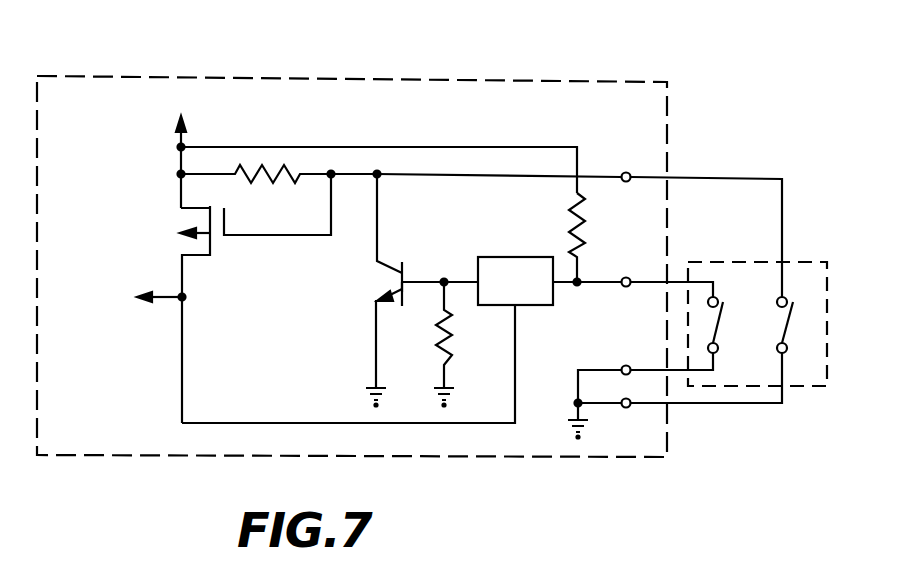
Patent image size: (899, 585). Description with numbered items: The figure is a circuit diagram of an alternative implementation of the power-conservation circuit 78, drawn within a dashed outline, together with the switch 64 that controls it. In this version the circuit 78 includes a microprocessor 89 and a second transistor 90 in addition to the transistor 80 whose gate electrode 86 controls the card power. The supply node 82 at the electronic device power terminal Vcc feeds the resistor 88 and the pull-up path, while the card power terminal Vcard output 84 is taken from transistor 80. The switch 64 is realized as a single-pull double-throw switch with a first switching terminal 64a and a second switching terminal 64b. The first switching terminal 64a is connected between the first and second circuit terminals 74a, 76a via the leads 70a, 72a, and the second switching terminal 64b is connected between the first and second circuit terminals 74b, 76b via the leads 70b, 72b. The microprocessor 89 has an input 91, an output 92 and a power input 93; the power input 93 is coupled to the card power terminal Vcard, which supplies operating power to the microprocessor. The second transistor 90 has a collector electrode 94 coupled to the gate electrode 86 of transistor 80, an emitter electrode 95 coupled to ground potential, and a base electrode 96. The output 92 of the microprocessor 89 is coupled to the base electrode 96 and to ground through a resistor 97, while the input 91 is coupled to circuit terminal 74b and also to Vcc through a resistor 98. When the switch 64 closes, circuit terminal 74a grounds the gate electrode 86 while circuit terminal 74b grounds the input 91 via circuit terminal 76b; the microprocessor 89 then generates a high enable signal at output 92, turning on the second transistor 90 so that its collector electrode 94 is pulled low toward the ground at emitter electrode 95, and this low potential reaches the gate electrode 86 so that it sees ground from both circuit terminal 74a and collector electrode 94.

The circuit 78 is at (105, 58).
The Vcc supply node 82 is at (178, 145).
The resistor 88 is at (256, 195).
The gate electrode 86 is at (287, 236).
The transistor 80 is at (210, 255).
The Vcard output 84 is at (165, 298).
The collector electrode 94 is at (378, 177).
The second transistor 90 is at (388, 258).
The output 92 is at (463, 277).
The microprocessor 89 is at (506, 263).
The resistor 98 is at (567, 215).
The input 91 is at (567, 288).
The emitter electrode 95 is at (376, 336).
The base electrode 96 is at (417, 284).
The resistor 97 is at (455, 340).
The power input 93 is at (516, 398).
The first circuit terminal 74a is at (626, 172).
The first circuit terminal 74b is at (626, 277).
The lead 70a is at (754, 176).
The lead 70b is at (649, 277).
The lead 72a is at (753, 410).
The lead 72b is at (645, 366).
The second circuit terminal 76a is at (622, 366).
The second circuit terminal 76b is at (623, 409).
The switch 64 is at (803, 406).
The first switching terminal 64a is at (793, 302).
The second switching terminal 64b is at (723, 302).